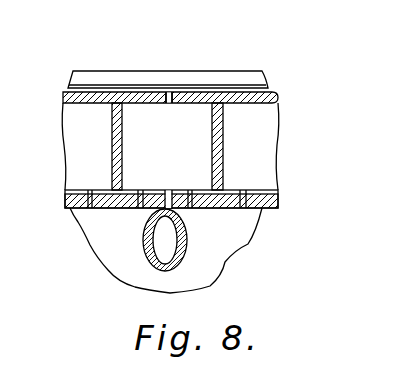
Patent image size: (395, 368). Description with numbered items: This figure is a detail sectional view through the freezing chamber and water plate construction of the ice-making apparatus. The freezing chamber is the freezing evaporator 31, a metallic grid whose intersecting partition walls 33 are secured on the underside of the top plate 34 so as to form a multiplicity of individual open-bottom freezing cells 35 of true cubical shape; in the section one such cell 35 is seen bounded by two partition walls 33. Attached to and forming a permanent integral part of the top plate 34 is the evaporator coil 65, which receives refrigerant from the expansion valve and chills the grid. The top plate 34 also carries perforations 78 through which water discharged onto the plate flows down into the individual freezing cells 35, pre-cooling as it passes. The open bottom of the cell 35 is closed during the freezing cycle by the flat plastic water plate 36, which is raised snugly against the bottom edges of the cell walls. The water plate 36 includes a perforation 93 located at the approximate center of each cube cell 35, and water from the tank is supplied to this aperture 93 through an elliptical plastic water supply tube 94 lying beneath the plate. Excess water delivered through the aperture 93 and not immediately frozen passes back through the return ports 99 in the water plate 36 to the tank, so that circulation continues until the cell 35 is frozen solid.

The freezing evaporator 31 is at (61, 130).
The partition walls 33 is at (112, 143).
The top plate 34 is at (278, 99).
The freezing cells 35 is at (154, 160).
The water plate 36 is at (253, 200).
The evaporator coil 65 is at (208, 70).
The perforations 78 is at (170, 97).
The perforation 93 is at (167, 200).
The water supply tubes 94 is at (185, 262).
The return ports 99 is at (146, 208).